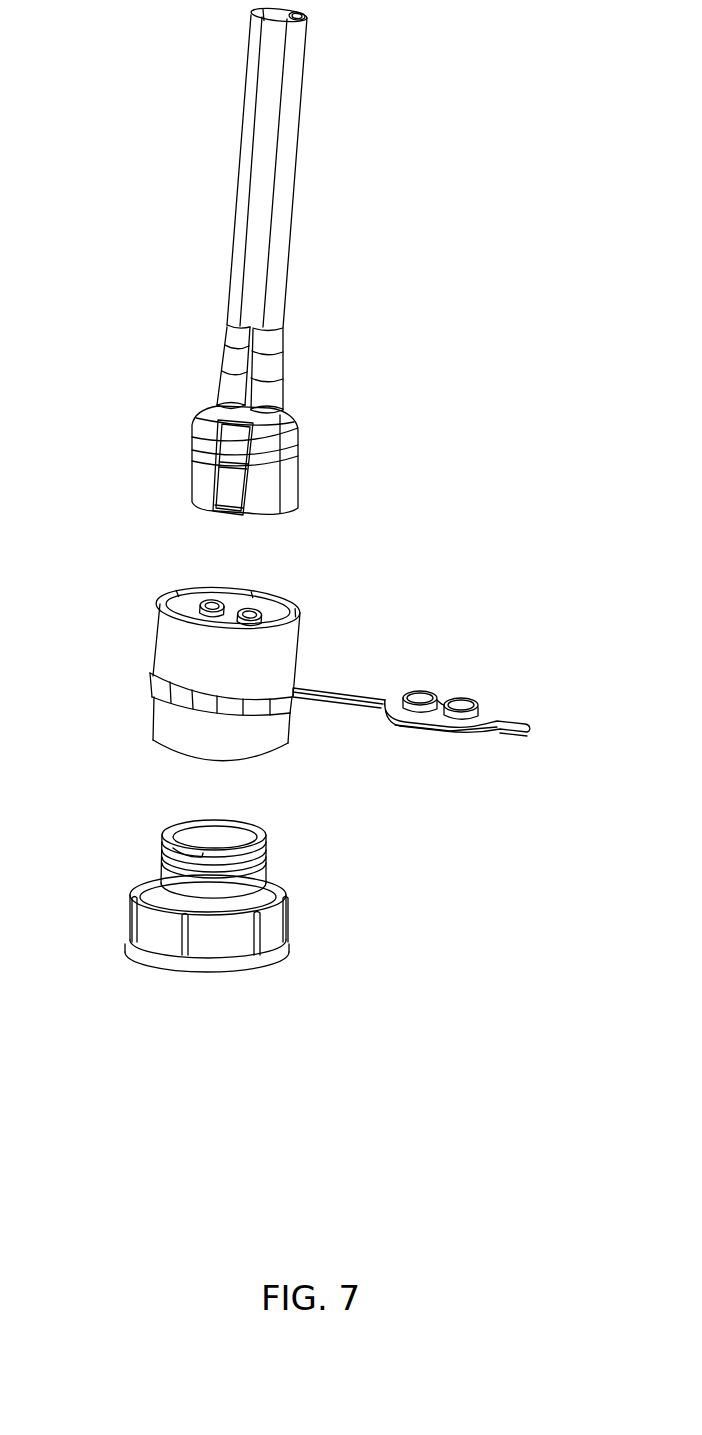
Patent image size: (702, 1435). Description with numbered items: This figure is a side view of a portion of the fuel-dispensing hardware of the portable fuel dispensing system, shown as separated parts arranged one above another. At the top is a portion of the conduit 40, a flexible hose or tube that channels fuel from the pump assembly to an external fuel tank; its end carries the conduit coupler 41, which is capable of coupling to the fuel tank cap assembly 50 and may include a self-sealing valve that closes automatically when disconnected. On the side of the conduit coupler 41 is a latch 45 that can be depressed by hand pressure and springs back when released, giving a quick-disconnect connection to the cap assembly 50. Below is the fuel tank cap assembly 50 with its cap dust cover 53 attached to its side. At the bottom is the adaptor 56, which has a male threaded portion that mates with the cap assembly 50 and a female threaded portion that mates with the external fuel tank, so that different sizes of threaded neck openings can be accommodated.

The conduit 40 is at (296, 104).
The conduit coupler 41 is at (298, 452).
The latch 45 is at (223, 494).
The fuel tank cap assembly 50 is at (155, 659).
The cap dust cover 53 is at (451, 733).
The adaptor 56 is at (137, 887).